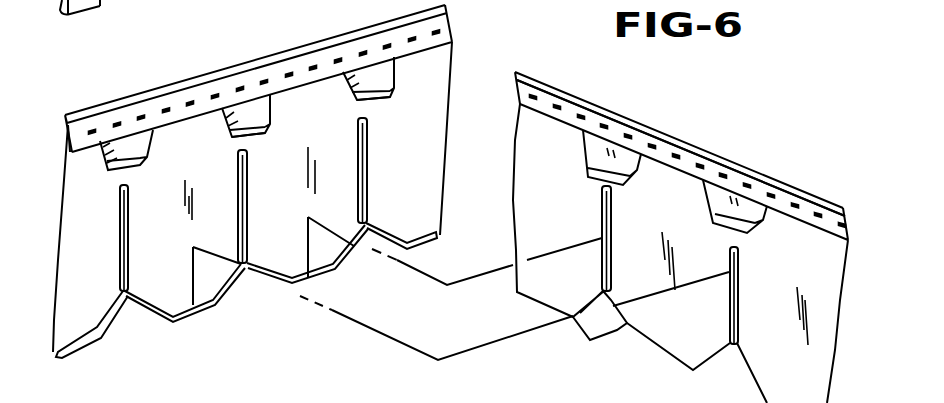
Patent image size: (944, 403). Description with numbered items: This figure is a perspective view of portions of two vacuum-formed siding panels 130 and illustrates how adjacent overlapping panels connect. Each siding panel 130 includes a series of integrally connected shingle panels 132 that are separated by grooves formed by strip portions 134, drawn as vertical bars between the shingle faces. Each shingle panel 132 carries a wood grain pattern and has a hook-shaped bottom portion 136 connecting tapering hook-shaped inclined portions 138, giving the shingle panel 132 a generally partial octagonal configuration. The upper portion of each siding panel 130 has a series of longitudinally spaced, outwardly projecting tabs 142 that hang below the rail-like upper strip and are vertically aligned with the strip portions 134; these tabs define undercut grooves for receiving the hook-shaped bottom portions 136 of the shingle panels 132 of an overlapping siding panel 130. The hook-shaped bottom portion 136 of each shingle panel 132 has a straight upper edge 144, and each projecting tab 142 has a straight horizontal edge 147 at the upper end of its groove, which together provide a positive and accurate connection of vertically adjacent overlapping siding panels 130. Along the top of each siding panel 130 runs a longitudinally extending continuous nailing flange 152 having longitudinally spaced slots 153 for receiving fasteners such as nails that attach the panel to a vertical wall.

The siding panel 130 is at (558, 70).
The shingle panel 132 is at (195, 0).
The strip portion 134 is at (237, 197).
The hook-shaped bottom portion 136 is at (199, 313).
The hook-shaped inclined portion 138 is at (151, 313).
The projecting tab 142 is at (363, 67).
The straight upper edge 144 is at (180, 307).
The straight horizontal edge 147 is at (363, 103).
The nailing flange 152 is at (593, 115).
The slot 153 is at (217, 95).